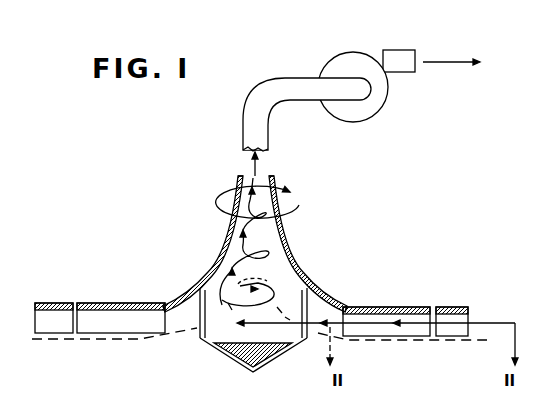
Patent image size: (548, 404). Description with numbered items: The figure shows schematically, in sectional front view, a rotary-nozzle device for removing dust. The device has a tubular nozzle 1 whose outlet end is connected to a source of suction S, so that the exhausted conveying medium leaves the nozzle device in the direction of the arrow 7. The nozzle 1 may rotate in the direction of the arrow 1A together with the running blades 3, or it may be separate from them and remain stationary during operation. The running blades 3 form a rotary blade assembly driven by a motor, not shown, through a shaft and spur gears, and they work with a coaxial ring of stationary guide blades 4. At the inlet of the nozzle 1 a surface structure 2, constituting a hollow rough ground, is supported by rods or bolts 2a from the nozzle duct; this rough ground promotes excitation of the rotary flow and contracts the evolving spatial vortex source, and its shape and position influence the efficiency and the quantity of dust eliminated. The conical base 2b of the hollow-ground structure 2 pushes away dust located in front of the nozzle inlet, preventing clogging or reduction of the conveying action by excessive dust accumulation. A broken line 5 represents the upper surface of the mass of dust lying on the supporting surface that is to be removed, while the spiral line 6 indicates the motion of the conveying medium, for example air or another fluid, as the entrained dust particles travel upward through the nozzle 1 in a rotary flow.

The source of suction S is at (338, 63).
The arrow 7 is at (252, 175).
The nozzle 1 is at (224, 246).
The arrow 1A is at (298, 198).
The surface structure 2 is at (277, 350).
The rods or bolts 2a is at (193, 290).
The conical base 2b is at (238, 353).
The running blades 3 is at (117, 303).
The fixed guide blades 4 is at (67, 303).
The broken line 5 is at (120, 340).
The spiral line 6 is at (247, 240).